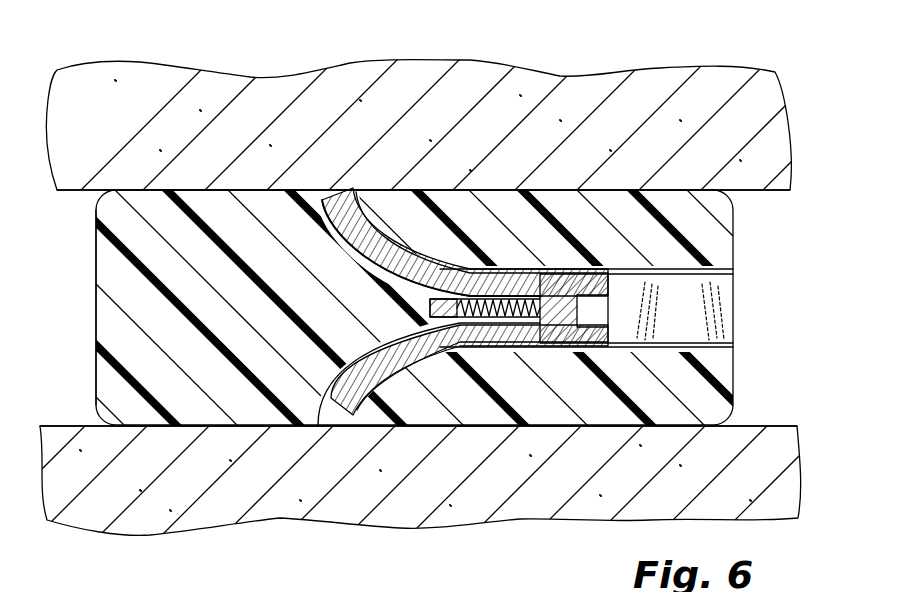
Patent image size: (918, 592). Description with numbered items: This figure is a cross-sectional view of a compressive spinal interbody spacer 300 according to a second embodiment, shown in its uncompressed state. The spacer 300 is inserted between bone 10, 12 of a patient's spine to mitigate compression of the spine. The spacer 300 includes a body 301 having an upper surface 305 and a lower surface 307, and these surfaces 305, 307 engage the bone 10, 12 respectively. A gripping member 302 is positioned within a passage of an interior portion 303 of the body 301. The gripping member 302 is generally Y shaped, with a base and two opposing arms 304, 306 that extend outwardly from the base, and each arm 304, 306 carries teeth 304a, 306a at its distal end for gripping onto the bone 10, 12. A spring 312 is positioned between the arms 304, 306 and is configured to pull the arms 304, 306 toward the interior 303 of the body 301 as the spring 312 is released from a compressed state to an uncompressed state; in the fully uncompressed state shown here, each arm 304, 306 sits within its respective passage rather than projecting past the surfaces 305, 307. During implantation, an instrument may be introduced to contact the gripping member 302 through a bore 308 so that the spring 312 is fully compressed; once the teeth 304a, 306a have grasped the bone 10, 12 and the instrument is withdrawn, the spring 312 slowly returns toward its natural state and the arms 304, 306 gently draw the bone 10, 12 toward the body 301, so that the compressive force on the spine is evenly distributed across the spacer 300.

The bone 10 is at (770, 98).
The bone 12 is at (797, 440).
The compressive spinal interbody spacer 300 is at (776, 246).
The body 301 is at (96, 265).
The gripping member 302 is at (562, 268).
The interior portion 303 is at (108, 330).
The arm 304 is at (396, 262).
The teeth 304a is at (338, 212).
The upper surface 305 is at (137, 190).
The arm 306 is at (435, 350).
The teeth 306a is at (353, 410).
The lower surface 307 is at (148, 427).
The bore 308 is at (608, 278).
The spring 312 is at (498, 285).